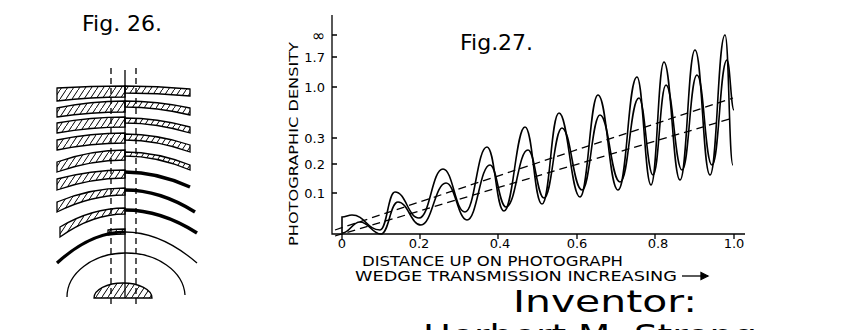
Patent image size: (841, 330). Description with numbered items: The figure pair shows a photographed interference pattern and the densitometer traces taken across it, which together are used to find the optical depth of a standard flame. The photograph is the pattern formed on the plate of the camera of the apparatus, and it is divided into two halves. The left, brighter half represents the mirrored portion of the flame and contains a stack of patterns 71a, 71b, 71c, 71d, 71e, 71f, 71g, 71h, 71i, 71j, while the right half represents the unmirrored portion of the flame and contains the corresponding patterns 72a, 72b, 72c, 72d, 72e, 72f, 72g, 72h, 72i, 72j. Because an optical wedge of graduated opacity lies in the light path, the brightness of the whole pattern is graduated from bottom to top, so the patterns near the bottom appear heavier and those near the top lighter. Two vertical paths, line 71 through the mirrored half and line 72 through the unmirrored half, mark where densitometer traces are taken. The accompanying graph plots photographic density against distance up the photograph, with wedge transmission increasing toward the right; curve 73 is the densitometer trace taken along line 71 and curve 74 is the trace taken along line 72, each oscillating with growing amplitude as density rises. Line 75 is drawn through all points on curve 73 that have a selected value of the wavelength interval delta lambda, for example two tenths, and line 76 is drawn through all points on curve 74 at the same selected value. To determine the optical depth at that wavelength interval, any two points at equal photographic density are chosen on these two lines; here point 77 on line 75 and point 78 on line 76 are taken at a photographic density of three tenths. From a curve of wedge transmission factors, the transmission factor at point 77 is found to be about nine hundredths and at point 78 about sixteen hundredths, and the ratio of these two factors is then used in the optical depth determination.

In FIG. 26, the line 71 is at (107, 78).
In FIG. 26, the line 72 is at (135, 75).
In FIG. 26, the pattern 71a is at (67, 297).
In FIG. 26, the pattern 71b is at (57, 263).
In FIG. 26, the pattern 71c is at (60, 231).
In FIG. 26, the pattern 71d is at (57, 206).
In FIG. 26, the pattern 71e is at (57, 184).
In FIG. 26, the pattern 71f is at (57, 167).
In FIG. 26, the pattern 71g is at (57, 146).
In FIG. 26, the pattern 71h is at (57, 128).
In FIG. 26, the pattern 71i is at (57, 110).
In FIG. 26, the pattern 71j is at (57, 88).
In FIG. 26, the pattern 72a is at (185, 295).
In FIG. 26, the pattern 72b is at (197, 263).
In FIG. 26, the pattern 72c is at (197, 233).
In FIG. 26, the pattern 72d is at (195, 212).
In FIG. 26, the pattern 72e is at (190, 187).
In FIG. 26, the pattern 72f is at (190, 168).
In FIG. 26, the pattern 72g is at (190, 150).
In FIG. 26, the pattern 72h is at (190, 131).
In FIG. 26, the pattern 72i is at (190, 112).
In FIG. 26, the pattern 72j is at (190, 92).
In FIG. 27, the curve 73 is at (497, 148).
In FIG. 27, the curve 74 is at (508, 207).
In FIG. 27, the line 75 is at (462, 183).
In FIG. 27, the line 76 is at (487, 193).
In FIG. 27, the point 77 is at (616, 130).
In FIG. 27, the point 78 is at (679, 133).